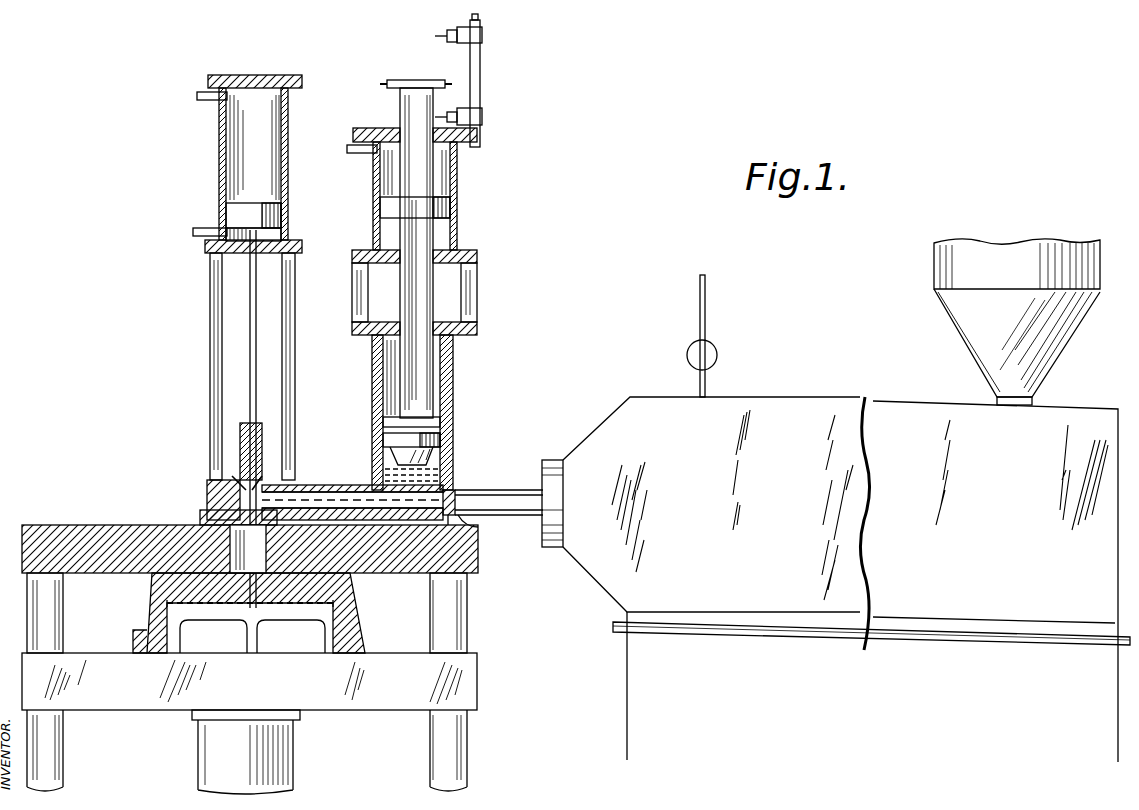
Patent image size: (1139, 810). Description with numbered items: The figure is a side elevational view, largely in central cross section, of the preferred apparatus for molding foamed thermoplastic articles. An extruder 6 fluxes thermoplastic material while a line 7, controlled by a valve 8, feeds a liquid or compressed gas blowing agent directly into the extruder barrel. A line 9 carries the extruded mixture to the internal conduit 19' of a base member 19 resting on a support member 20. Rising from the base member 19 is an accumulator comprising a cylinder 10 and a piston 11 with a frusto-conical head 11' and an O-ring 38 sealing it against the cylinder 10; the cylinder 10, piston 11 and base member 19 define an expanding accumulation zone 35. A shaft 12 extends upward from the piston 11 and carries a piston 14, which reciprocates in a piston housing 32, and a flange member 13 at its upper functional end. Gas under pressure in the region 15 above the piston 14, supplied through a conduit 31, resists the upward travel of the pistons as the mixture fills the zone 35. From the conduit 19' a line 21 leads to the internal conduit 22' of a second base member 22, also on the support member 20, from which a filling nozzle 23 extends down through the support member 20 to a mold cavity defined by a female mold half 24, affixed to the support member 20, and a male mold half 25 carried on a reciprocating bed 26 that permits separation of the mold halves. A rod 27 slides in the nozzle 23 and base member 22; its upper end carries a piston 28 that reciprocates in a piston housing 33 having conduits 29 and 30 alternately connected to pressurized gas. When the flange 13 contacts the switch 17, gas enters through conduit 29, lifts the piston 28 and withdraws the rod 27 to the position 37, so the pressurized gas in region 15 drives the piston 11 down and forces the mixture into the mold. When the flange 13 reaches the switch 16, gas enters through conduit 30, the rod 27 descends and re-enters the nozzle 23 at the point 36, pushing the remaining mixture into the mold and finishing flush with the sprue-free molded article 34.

The extruder 6 is at (614, 420).
The line 7 is at (705, 300).
The valve 8 is at (687, 356).
The line 9 is at (490, 500).
The cylinder 10 is at (374, 382).
The piston 11 is at (386, 445).
The frusto-conical head 11' is at (382, 474).
The shaft 12 is at (420, 376).
The flange member 13 is at (403, 82).
The piston 14 is at (448, 205).
The region 15 is at (437, 163).
The switch 16 is at (481, 117).
The switch 17 is at (481, 35).
The base member 19 is at (481, 532).
The internal conduit 19' is at (467, 491).
The support member 20 is at (470, 562).
The line 21 is at (372, 538).
The second base member 22 is at (213, 498).
The internal conduit 22' is at (284, 445).
The filling nozzle 23 is at (213, 636).
The female mold half 24 is at (335, 588).
The male mold half 25 is at (322, 640).
The reciprocating bed 26 is at (175, 732).
The rod 27 is at (250, 344).
The piston 28 is at (272, 210).
The conduit 29 is at (203, 229).
The conduit 30 is at (205, 93).
The conduit 31 is at (358, 155).
The piston housing 32 is at (457, 236).
The piston housing 33 is at (290, 122).
The molded article 34 is at (170, 605).
The accumulation zone 35 is at (430, 460).
The point 36 is at (270, 500).
The position 37 is at (244, 490).
The O-ring 38 is at (438, 424).